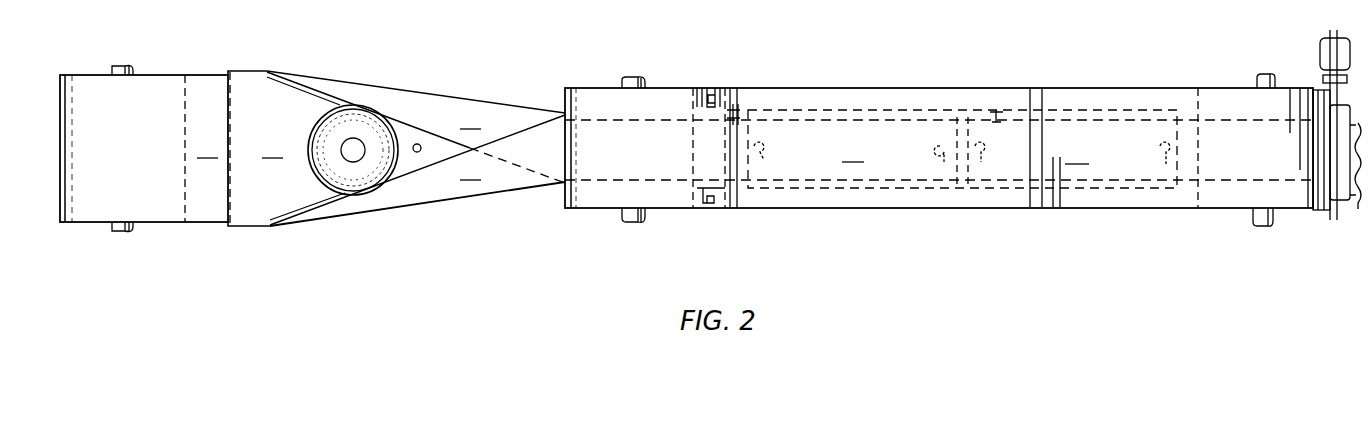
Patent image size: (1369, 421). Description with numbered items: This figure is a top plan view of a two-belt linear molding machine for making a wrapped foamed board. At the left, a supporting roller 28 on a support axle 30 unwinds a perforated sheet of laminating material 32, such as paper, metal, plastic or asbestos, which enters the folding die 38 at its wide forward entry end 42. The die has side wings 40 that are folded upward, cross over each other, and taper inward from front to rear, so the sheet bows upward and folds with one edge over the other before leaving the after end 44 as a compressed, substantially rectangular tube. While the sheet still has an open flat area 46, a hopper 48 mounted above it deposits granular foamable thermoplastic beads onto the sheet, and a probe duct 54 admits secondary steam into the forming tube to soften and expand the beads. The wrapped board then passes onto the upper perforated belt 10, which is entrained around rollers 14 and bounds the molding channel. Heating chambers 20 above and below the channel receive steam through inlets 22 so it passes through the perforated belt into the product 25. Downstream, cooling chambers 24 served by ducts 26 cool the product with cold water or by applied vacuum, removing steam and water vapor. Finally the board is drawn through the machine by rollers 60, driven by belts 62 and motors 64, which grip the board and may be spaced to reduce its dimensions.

The upper perforated belt 10 is at (818, 204).
The rollers 14 is at (657, 210).
The heating chambers 20 is at (962, 149).
The inlets 22 is at (849, 159).
The cooling chambers 24 is at (1023, 152).
The product 25 is at (1352, 179).
The ducts 26 is at (1072, 159).
The supporting roller 28 is at (186, 214).
The support axle 30 is at (126, 231).
The sheet of laminating material 32 is at (144, 148).
The folding die 38 is at (462, 206).
The side wings 40 is at (416, 148).
The forward entry end 42 is at (262, 227).
The after end 44 is at (548, 185).
The open flat area 46 is at (256, 148).
The hopper 48 is at (330, 118).
The probe duct 54 is at (436, 120).
The rollers 60 is at (1321, 196).
The belts 62 is at (1323, 80).
The motors 64 is at (1320, 56).